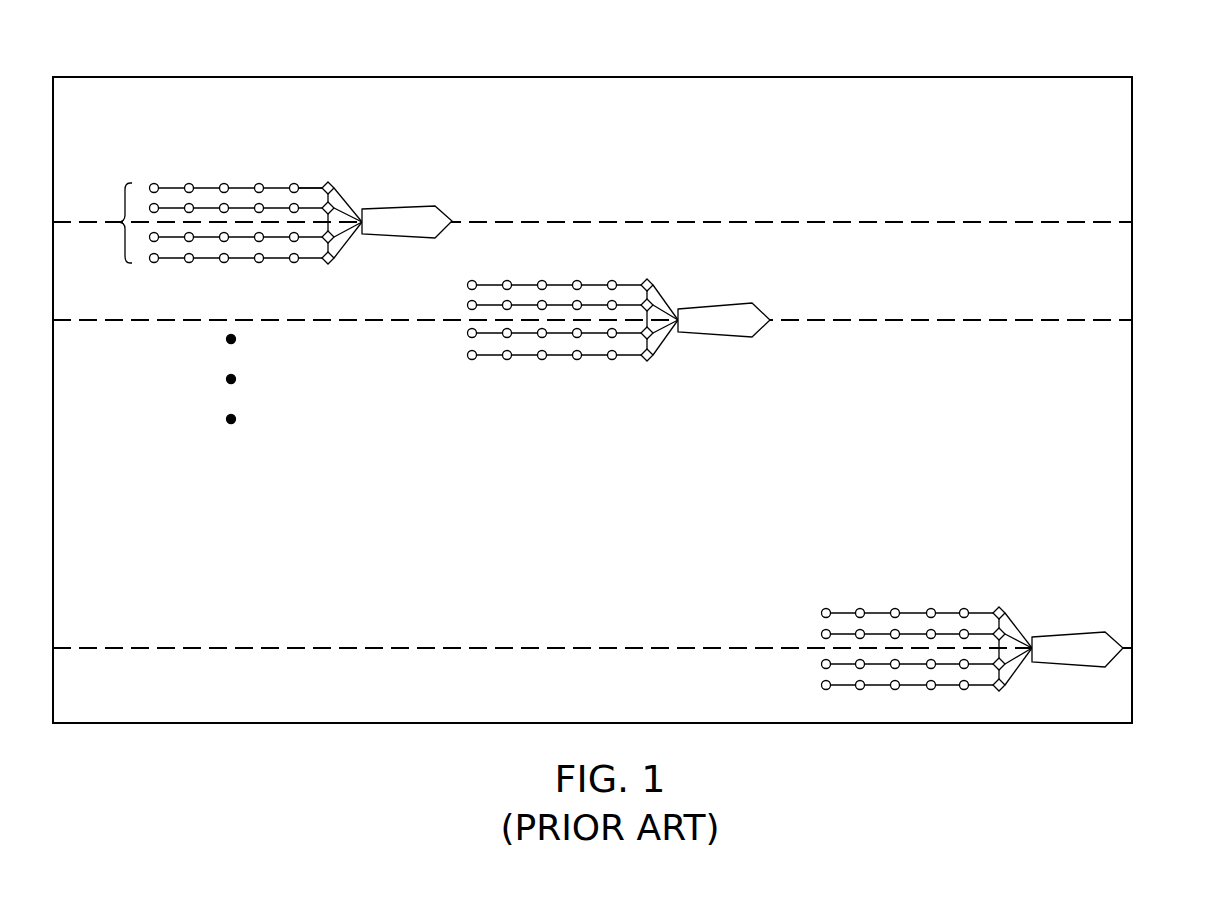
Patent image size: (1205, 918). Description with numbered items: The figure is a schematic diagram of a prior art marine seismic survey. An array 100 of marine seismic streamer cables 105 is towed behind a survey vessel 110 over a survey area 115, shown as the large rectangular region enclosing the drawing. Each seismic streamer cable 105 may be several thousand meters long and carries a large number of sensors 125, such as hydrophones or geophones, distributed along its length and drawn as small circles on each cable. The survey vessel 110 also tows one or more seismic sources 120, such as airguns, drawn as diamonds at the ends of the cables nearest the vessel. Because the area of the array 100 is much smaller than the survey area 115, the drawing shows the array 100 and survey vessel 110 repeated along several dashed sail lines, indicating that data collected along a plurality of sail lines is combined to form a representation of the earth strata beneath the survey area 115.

The array 100 is at (551, 400).
The marine seismic streamer cable 105 is at (307, 187).
The survey vessel 110 is at (385, 239).
The survey area 115 is at (688, 77).
The seismic source 120 is at (334, 182).
The sensor 125 is at (294, 183).